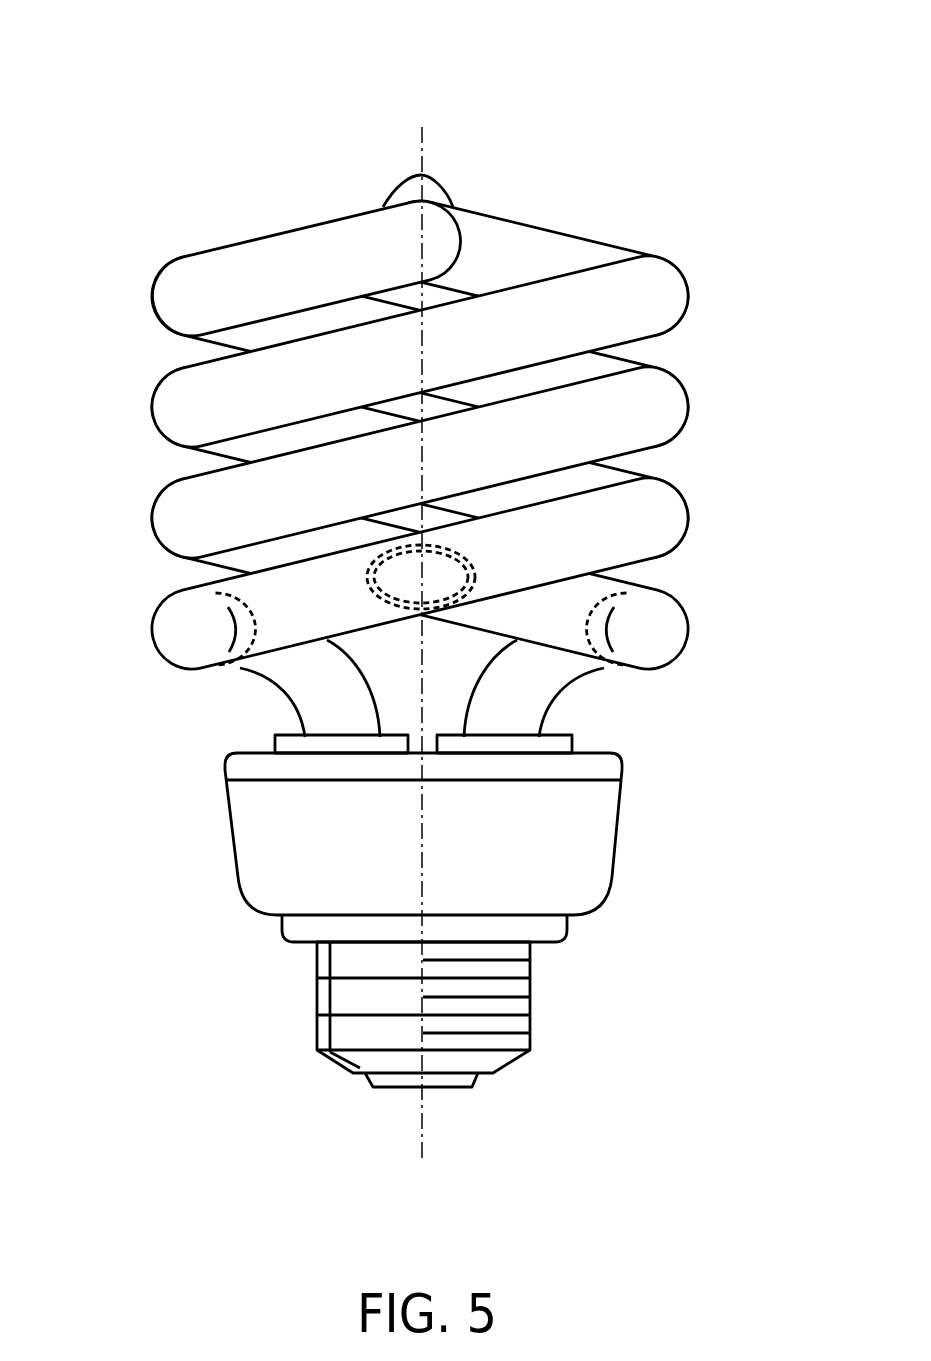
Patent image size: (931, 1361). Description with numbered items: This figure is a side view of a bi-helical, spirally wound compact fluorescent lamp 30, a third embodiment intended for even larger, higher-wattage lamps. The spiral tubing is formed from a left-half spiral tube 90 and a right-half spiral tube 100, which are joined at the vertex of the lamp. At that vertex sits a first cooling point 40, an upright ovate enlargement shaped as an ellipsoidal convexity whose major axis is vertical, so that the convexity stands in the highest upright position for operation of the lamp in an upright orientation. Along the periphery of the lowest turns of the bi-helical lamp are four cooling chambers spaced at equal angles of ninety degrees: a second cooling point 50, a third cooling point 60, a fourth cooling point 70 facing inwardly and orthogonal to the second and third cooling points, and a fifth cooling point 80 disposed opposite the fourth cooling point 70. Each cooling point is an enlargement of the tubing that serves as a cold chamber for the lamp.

The compact fluorescent lamp 30 is at (436, 588).
The first cooling point 40 is at (421, 175).
The second cooling point 50 is at (473, 569).
The third cooling point 60 is at (368, 570).
The fourth cooling point 70 is at (375, 593).
The fifth cooling point 80 is at (465, 595).
The left-half spiral tube 90 is at (156, 277).
The right-half spiral tube 100 is at (684, 265).